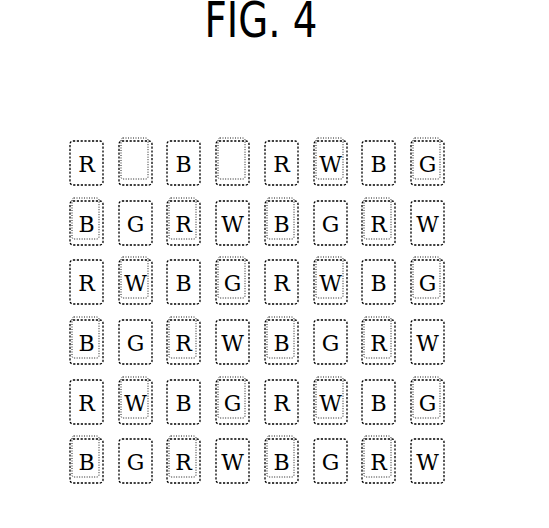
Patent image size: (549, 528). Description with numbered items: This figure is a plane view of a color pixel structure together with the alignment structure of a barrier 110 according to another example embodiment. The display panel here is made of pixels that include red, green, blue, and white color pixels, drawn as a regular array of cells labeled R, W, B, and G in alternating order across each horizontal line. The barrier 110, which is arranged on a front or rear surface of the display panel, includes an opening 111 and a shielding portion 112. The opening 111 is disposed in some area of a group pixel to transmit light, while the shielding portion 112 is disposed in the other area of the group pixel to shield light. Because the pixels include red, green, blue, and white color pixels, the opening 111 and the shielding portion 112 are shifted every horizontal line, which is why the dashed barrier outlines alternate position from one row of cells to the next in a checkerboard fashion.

The opening 111 is at (208, 139).
The shielding portion 112 is at (145, 138).
The barrier 110 is at (257, 340).